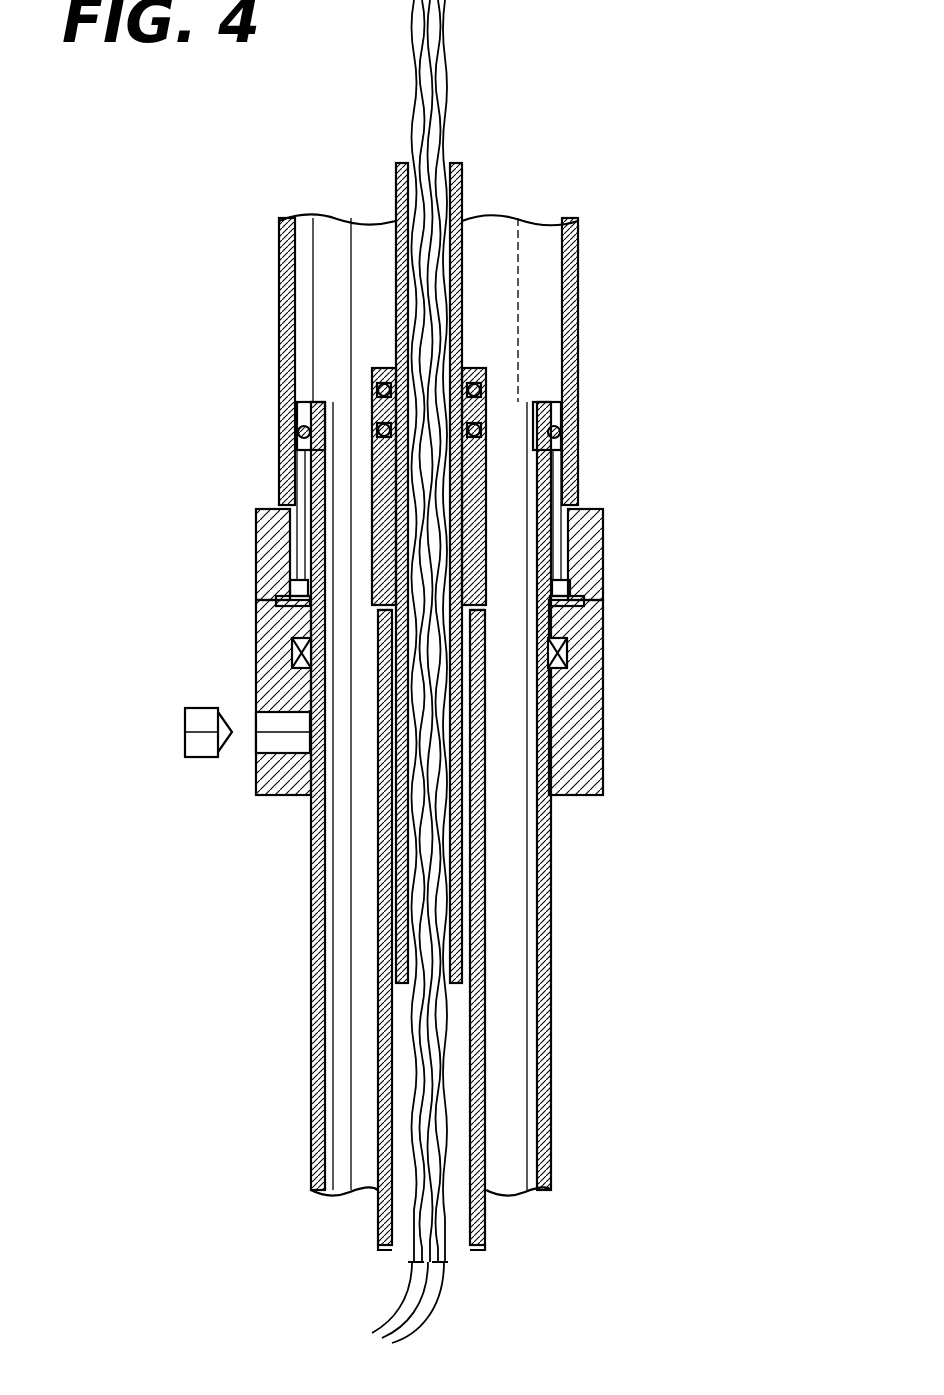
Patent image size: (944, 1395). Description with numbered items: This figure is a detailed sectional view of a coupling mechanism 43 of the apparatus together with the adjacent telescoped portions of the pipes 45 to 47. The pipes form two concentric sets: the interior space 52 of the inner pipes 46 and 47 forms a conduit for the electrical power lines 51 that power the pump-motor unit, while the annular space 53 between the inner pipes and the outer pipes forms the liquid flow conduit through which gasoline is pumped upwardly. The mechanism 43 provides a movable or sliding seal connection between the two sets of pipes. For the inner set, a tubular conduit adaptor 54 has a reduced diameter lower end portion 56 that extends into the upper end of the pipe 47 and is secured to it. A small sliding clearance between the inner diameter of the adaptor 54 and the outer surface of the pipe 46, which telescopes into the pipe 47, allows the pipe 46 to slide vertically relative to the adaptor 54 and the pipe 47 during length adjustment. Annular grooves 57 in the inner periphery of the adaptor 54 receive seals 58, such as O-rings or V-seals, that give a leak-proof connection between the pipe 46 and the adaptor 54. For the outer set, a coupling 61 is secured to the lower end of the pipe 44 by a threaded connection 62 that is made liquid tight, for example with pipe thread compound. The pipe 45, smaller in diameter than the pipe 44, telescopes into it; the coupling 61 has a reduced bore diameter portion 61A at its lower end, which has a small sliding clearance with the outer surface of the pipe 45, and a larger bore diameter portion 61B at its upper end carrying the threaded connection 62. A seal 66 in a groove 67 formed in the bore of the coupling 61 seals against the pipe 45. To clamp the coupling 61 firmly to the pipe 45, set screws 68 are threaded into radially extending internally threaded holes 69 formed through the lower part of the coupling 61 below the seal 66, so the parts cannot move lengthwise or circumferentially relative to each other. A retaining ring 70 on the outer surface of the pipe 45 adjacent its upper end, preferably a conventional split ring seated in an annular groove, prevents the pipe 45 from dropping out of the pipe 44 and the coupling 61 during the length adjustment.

The mechanism 43 is at (634, 579).
The pipe 44 is at (578, 227).
The pipe 45 is at (553, 1122).
The pipe 46 is at (462, 183).
The pipe 47 is at (490, 1230).
The electrical power lines 51 is at (394, 676).
The interior space 52 is at (402, 1120).
The annular space 53 is at (518, 1043).
The tubular conduit adaptor 54 is at (455, 387).
The reduced diameter lower end portion 56 is at (475, 633).
The annular grooves 57 is at (482, 427).
The seals 58 is at (388, 430).
The coupling 61 is at (461, 675).
The reduced bore diameter portion 61A is at (582, 795).
The larger bore diameter portion 61B is at (600, 543).
The threaded connection 62 is at (580, 506).
The seal 66 is at (566, 651).
The groove 67 is at (262, 665).
The set screws 68 is at (195, 757).
The internally threaded holes 69 is at (258, 750).
The retaining ring 70 is at (557, 432).